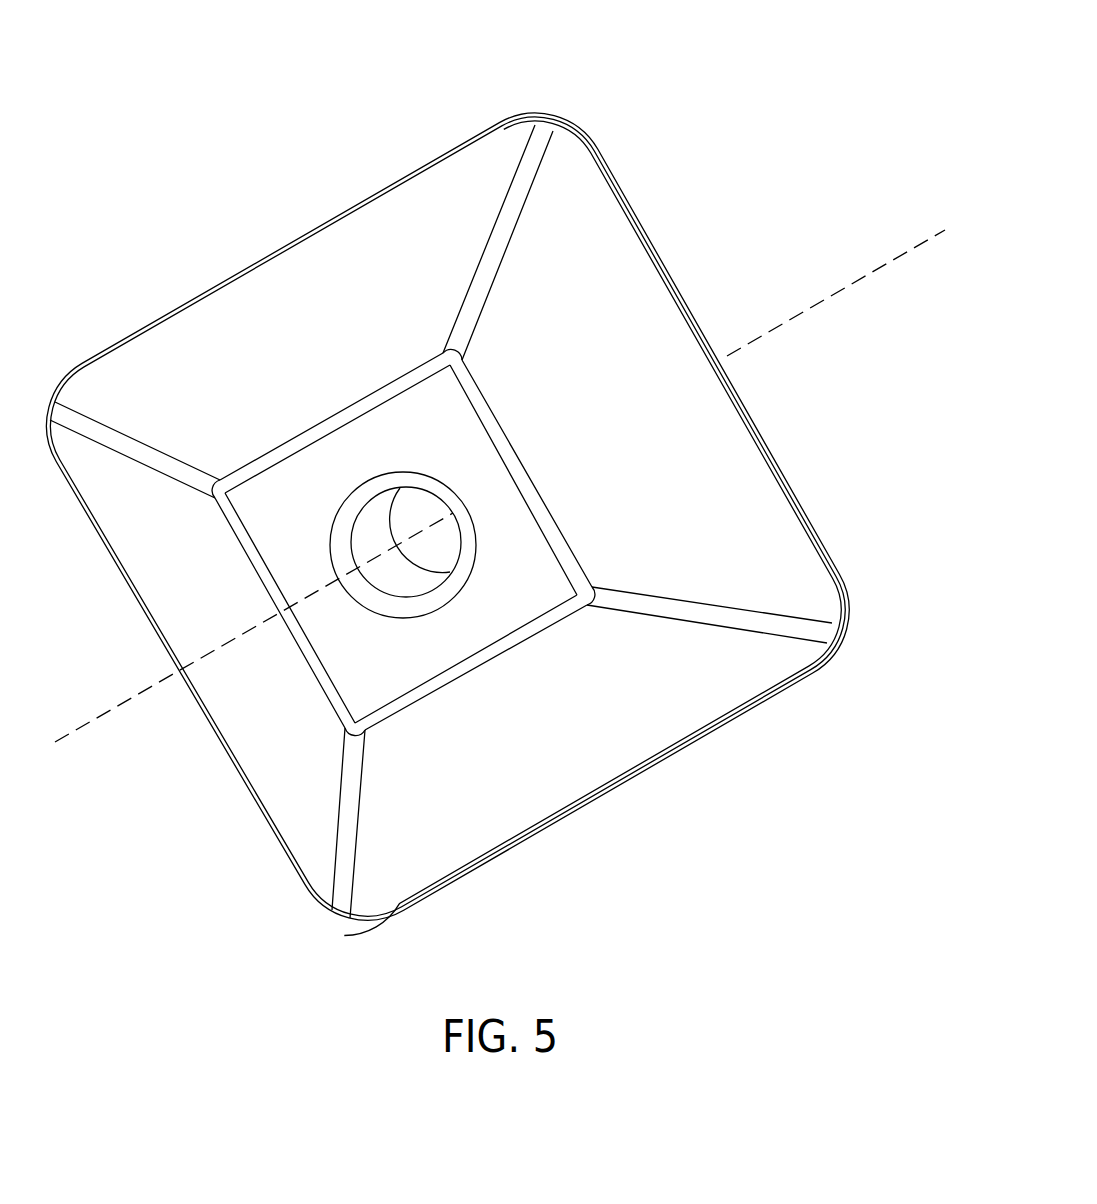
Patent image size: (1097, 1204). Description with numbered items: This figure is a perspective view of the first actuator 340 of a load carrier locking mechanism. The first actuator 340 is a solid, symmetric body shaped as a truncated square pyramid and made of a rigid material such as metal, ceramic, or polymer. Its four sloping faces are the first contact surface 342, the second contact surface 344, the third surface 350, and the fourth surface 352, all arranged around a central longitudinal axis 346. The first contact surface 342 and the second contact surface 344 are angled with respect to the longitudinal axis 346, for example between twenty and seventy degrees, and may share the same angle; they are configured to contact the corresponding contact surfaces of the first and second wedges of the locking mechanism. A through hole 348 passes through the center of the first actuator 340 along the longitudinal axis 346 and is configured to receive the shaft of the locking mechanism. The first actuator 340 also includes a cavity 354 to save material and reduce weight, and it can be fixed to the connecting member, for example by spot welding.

The first actuator 340 is at (627, 57).
The first contact surface 342 is at (313, 266).
The second contact surface 344 is at (743, 465).
The longitudinal axis 346 is at (103, 715).
The through hole 348 is at (410, 578).
The third surface 350 is at (598, 772).
The fourth surface 352 is at (290, 795).
The cavity 354 is at (700, 290).